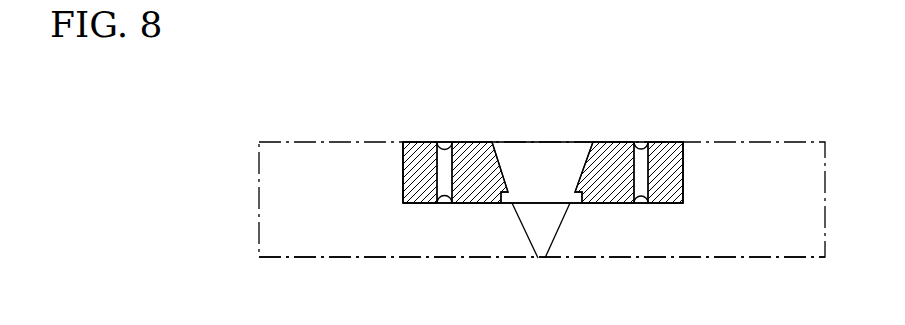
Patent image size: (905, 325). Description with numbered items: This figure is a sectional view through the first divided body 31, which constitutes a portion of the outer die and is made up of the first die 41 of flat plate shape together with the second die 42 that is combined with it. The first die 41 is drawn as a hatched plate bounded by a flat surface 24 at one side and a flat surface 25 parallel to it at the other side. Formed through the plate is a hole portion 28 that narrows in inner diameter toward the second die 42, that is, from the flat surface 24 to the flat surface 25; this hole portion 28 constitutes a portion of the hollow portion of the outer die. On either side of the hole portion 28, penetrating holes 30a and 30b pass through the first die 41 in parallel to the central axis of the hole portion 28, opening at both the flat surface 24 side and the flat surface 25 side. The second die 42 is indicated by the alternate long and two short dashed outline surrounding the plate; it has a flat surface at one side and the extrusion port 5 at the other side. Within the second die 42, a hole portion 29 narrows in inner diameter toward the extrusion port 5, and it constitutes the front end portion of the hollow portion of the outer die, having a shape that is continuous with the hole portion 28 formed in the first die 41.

The extrusion port 5 is at (542, 291).
The flat surface 24 is at (557, 138).
The flat surface 25 is at (543, 258).
The hole portion 28 is at (542, 135).
The hole portion 29 is at (530, 251).
The penetrating hole 30a is at (654, 135).
The penetrating hole 30b is at (457, 135).
The first divided body 31 is at (233, 53).
The first die 41 is at (391, 137).
The second die 42 is at (749, 136).